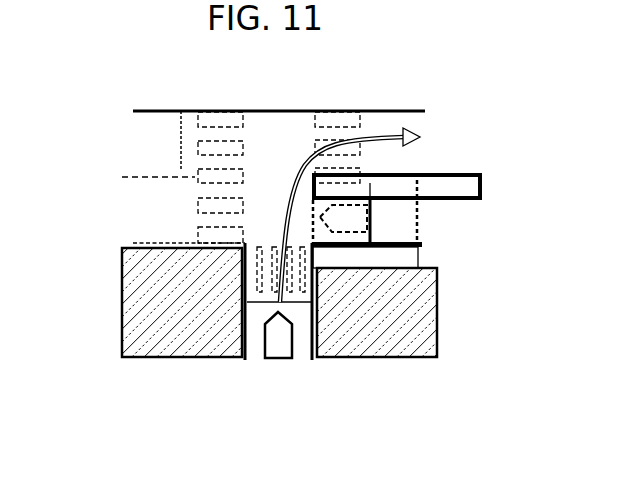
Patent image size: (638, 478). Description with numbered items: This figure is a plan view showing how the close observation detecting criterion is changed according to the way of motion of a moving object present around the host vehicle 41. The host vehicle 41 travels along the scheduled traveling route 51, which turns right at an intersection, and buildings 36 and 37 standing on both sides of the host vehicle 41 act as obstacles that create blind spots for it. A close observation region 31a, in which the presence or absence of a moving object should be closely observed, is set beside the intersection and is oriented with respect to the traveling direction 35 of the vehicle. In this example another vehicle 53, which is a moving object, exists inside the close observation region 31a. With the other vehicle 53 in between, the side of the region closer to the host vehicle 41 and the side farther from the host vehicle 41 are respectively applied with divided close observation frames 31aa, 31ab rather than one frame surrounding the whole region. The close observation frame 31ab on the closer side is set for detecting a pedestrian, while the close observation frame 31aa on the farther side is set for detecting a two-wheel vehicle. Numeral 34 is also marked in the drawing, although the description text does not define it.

The gas flow / housing wall 34 is at (148, 143).
The scheduled traveling route 51 is at (398, 133).
The another vehicle 53 is at (347, 212).
The close observation frame 31aa is at (482, 185).
The close observation region 31a is at (422, 233).
The close observation frame 31ab is at (418, 266).
The traveling direction 35 is at (422, 208).
The building 36 is at (437, 318).
The building 37 is at (122, 310).
The host vehicle 41 is at (281, 352).